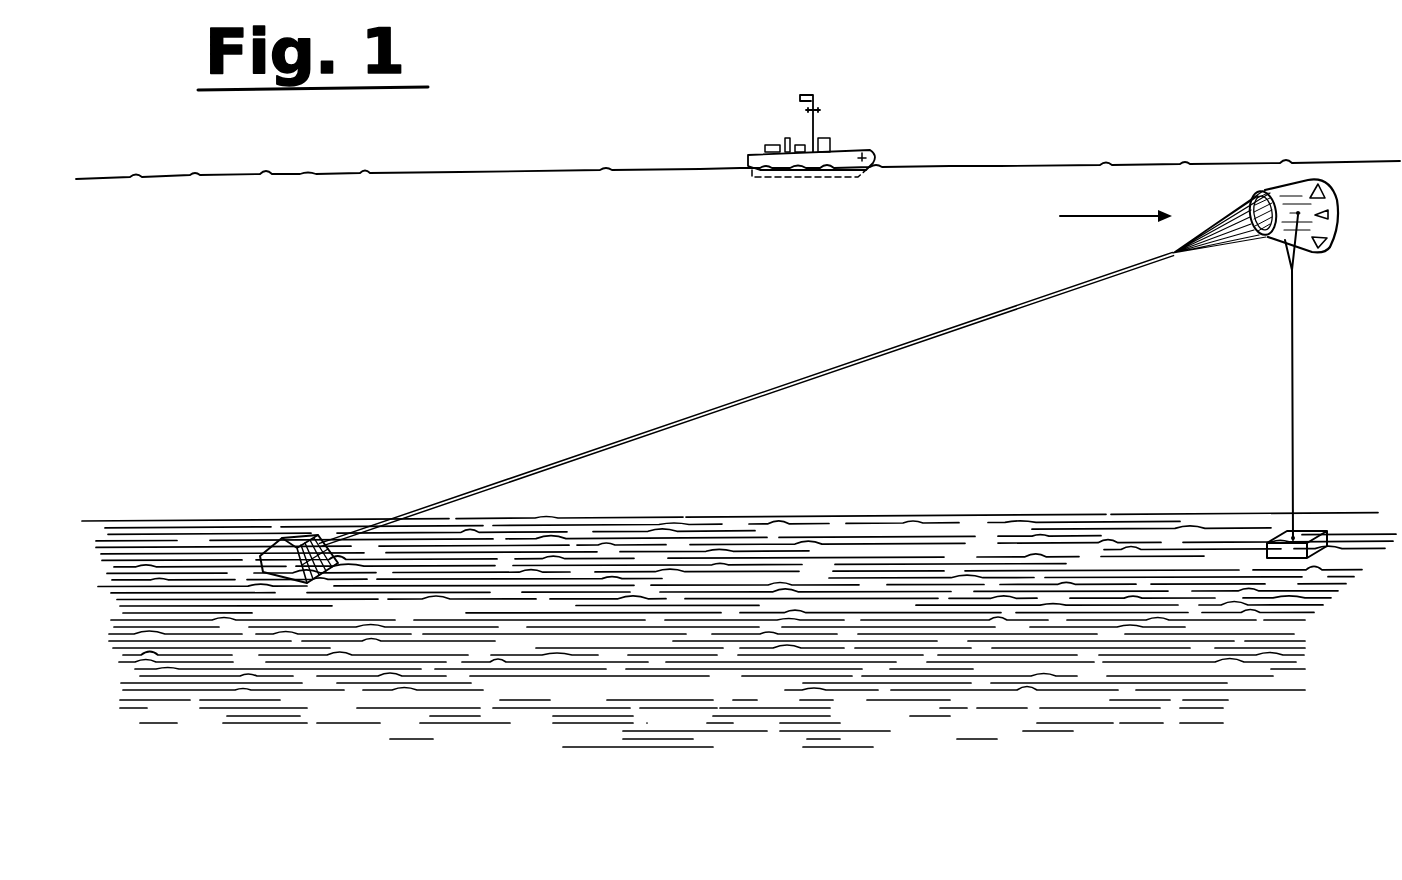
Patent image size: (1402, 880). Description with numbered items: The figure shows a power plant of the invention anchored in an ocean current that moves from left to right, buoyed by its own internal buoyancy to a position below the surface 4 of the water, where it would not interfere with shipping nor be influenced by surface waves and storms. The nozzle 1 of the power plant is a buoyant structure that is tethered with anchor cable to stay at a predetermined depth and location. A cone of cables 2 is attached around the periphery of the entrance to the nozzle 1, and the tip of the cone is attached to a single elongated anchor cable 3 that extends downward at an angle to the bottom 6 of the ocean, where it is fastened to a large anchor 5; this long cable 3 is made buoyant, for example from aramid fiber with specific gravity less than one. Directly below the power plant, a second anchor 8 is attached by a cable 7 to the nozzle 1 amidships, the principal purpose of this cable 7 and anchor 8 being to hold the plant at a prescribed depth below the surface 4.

The nozzle 1 is at (1300, 178).
The cone of cables 2 is at (1225, 193).
The anchor cable 3 is at (950, 329).
The surface 4 is at (962, 166).
The anchor 5 is at (275, 543).
The bottom 6 is at (712, 517).
The cable 7 is at (1291, 337).
The second anchor 8 is at (1280, 533).